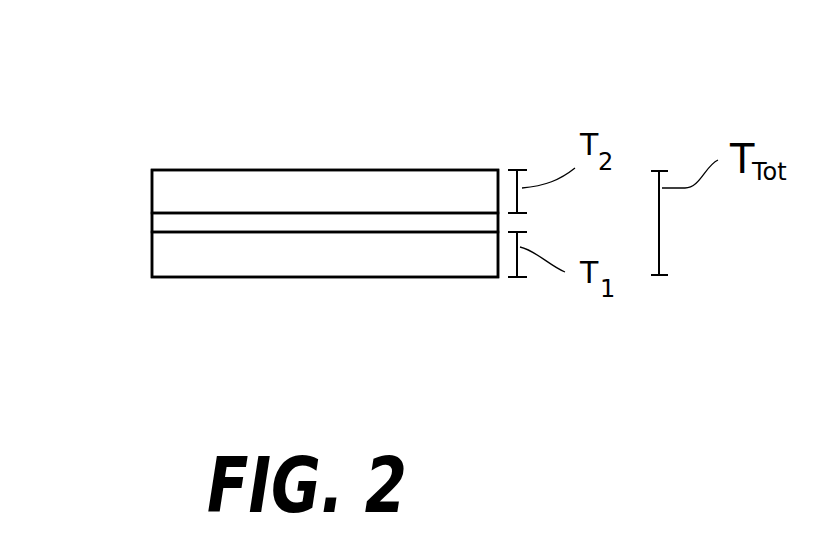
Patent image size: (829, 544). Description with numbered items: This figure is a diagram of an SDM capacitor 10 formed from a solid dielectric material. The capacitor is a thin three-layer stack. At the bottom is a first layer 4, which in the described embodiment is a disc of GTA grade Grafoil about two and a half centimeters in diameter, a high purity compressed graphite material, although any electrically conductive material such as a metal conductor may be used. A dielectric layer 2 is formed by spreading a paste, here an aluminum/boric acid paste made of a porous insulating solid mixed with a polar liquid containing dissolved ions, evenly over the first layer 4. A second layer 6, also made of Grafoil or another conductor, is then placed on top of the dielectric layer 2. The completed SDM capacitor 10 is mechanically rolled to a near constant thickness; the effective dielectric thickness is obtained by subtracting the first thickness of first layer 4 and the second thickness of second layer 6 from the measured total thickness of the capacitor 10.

The SDM capacitor 10 is at (312, 159).
The second layer 6 is at (152, 174).
The dielectric layer 2 is at (152, 222).
The first layer 4 is at (152, 266).